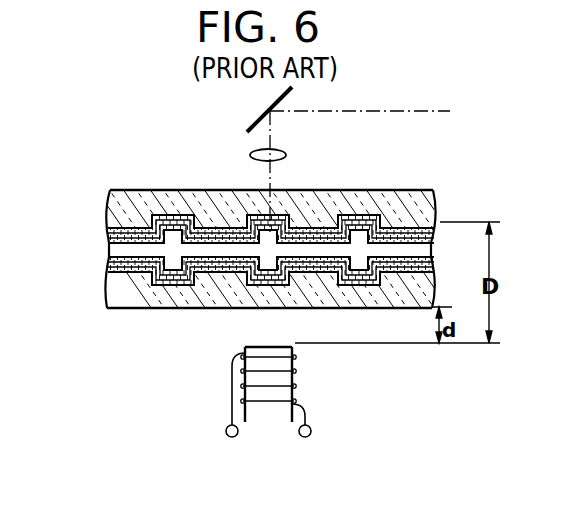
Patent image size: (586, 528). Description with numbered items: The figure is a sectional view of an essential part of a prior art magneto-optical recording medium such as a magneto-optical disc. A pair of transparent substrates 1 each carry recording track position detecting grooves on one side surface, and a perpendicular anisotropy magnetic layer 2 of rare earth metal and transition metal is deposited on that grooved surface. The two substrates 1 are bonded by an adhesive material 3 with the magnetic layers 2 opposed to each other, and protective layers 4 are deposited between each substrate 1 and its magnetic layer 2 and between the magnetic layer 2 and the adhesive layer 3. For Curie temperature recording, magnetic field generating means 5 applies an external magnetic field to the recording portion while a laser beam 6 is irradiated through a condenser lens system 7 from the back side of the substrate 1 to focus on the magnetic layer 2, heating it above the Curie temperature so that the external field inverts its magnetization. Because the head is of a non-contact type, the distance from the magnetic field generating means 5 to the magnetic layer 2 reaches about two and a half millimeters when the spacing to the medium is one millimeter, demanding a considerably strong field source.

The transparent substrate 1 is at (165, 198).
The perpendicular anisotropy magnetic layer 2 is at (378, 208).
The adhesive material 3 is at (112, 248).
The protective layer 4 is at (112, 238).
The magnetic field generating means 5 is at (278, 378).
The laser beam 6 is at (275, 122).
The condenser lens system 7 is at (285, 157).